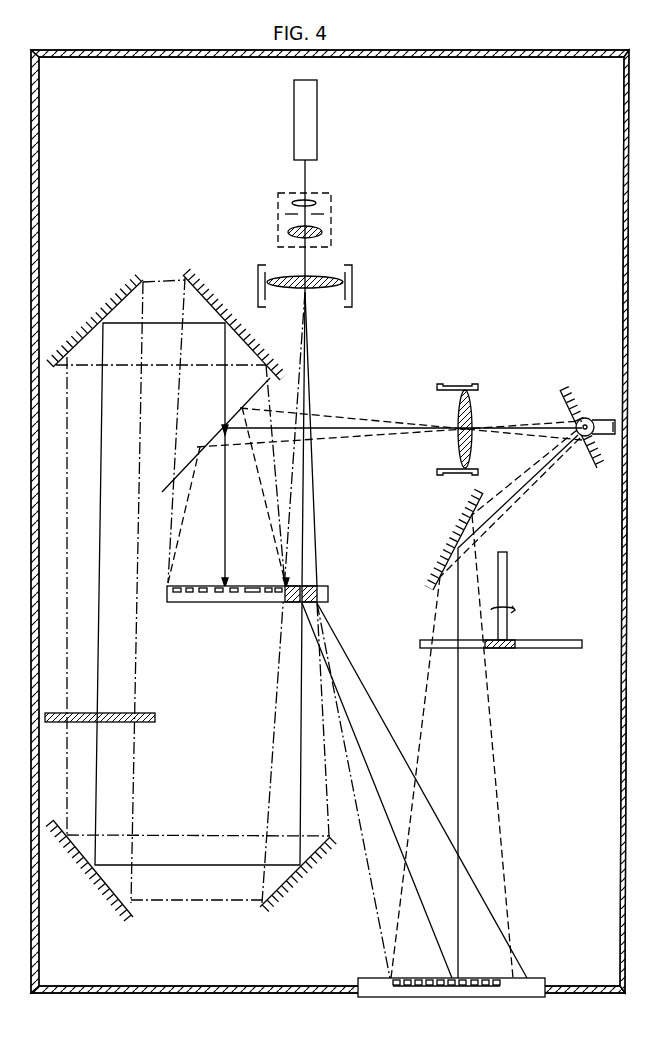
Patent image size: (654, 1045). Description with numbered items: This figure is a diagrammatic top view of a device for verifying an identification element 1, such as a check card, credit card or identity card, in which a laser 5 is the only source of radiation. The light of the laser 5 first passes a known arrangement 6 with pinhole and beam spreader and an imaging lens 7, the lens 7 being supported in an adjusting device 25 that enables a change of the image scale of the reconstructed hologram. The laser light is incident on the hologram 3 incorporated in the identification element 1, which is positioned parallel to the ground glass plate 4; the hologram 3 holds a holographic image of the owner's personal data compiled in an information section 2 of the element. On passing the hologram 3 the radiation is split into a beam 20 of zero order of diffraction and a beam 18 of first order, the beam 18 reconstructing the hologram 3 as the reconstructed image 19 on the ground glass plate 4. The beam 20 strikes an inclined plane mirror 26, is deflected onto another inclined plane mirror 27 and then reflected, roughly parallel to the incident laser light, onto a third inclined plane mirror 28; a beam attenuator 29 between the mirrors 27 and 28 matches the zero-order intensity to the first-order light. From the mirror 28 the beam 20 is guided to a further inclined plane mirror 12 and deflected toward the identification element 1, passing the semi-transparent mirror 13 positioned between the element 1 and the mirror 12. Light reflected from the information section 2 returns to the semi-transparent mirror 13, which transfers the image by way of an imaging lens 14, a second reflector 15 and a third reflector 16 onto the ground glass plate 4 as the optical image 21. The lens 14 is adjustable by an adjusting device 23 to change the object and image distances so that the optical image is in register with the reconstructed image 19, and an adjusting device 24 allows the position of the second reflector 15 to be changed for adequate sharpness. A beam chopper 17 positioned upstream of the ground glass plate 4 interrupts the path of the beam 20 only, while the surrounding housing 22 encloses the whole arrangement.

The identification element 1 is at (235, 595).
The information section 2 is at (193, 586).
The hologram 3 is at (287, 605).
The ground glass plate 4 is at (435, 986).
The laser 5 is at (307, 136).
The arrangement with pinhole and beam spreader 6 is at (331, 213).
The imaging lens 7 is at (330, 287).
The plane mirror 12 is at (210, 303).
The semi-transparent mirror 13 is at (200, 455).
The imaging lens 14 is at (468, 385).
The second reflector 15 is at (572, 395).
The third reflector 16 is at (456, 547).
The beam chopper 17 is at (500, 650).
The beam 18 is at (360, 875).
The reconstructed image 19 is at (418, 987).
The beam of zero order of diffraction 20 is at (275, 542).
The optical image 21 is at (428, 979).
The housing 22 is at (620, 769).
The adjusting device 23 is at (453, 381).
The adjusting device 24 is at (600, 420).
The adjusting device 25 is at (352, 305).
The plane mirror 26 is at (286, 885).
The plane mirror 27 is at (93, 873).
The plane mirror 28 is at (100, 321).
The beam attenuator 29 is at (157, 718).